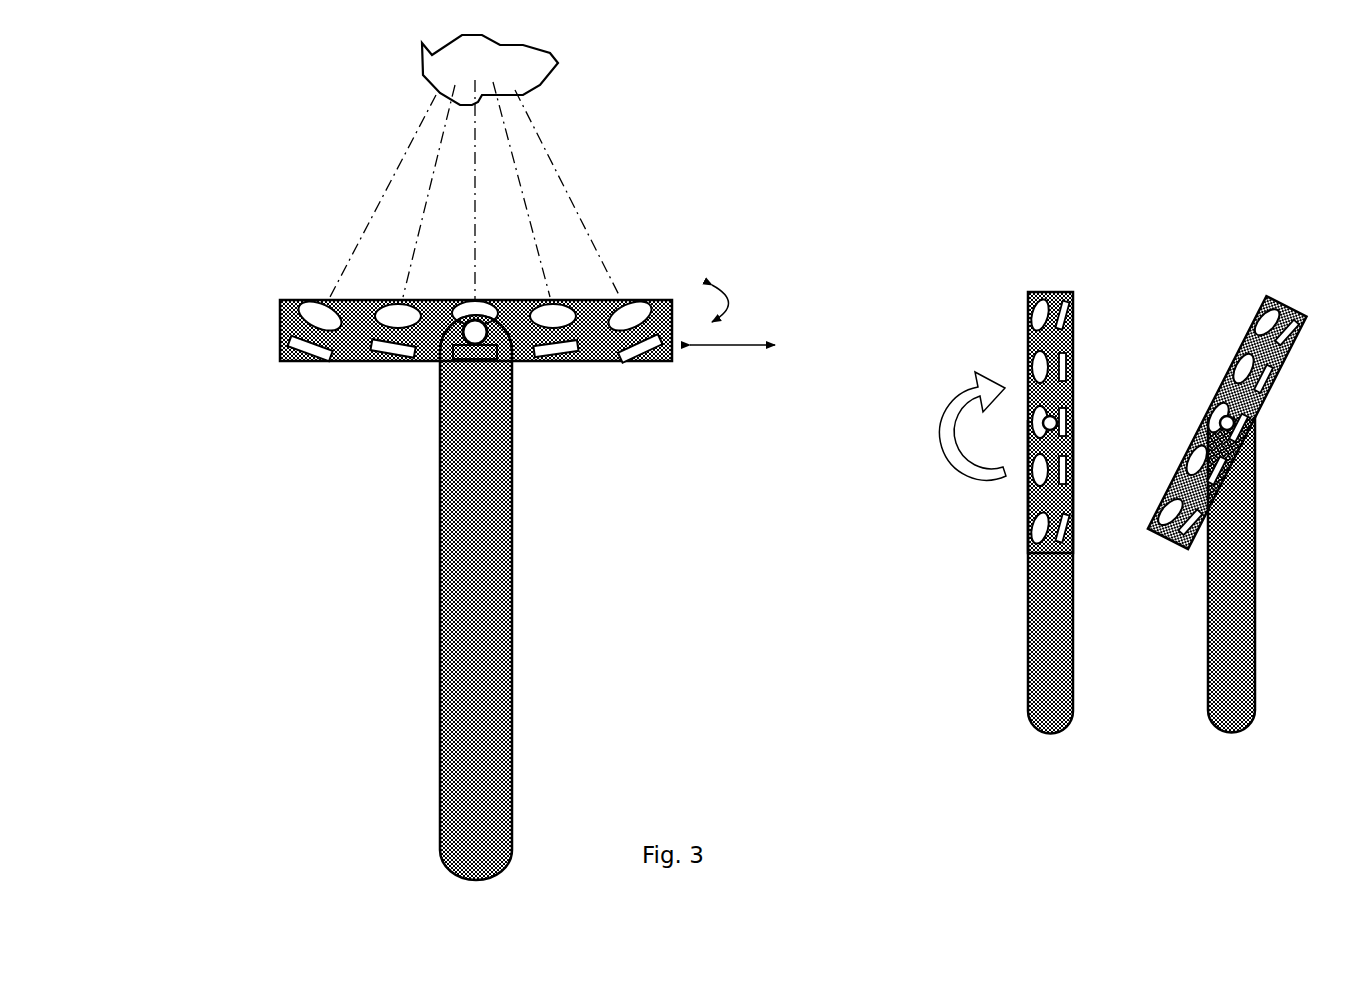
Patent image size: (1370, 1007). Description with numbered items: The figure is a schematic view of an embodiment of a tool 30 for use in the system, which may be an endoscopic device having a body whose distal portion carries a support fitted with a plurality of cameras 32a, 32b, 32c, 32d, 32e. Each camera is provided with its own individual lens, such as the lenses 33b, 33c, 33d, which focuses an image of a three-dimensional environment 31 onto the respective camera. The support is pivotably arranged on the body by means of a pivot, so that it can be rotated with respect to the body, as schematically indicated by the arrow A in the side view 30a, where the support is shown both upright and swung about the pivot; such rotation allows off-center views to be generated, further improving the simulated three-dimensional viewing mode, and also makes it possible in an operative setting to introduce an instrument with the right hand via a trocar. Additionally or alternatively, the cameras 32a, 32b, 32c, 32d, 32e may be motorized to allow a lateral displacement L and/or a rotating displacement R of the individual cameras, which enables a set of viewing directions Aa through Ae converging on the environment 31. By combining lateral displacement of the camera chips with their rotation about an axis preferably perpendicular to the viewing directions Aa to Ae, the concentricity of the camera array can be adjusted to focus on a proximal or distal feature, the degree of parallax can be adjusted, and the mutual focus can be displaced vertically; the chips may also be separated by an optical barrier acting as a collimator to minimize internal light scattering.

The tool 30 is at (672, 130).
The view 30a is at (1148, 220).
The three-dimensional environment 31 is at (430, 64).
The camera 32a is at (320, 361).
The camera 32b is at (405, 361).
The camera 32c is at (508, 362).
The camera 32d is at (563, 361).
The camera 32e is at (655, 361).
The lens 33b is at (1030, 485).
The lens 33c is at (1030, 408).
The lens 33d is at (1030, 362).
The viewing direction Aa is at (378, 193).
The viewing direction Ae is at (552, 165).
The rotating displacement R is at (733, 303).
The lateral displacement L is at (720, 345).
The arrow A is at (947, 455).